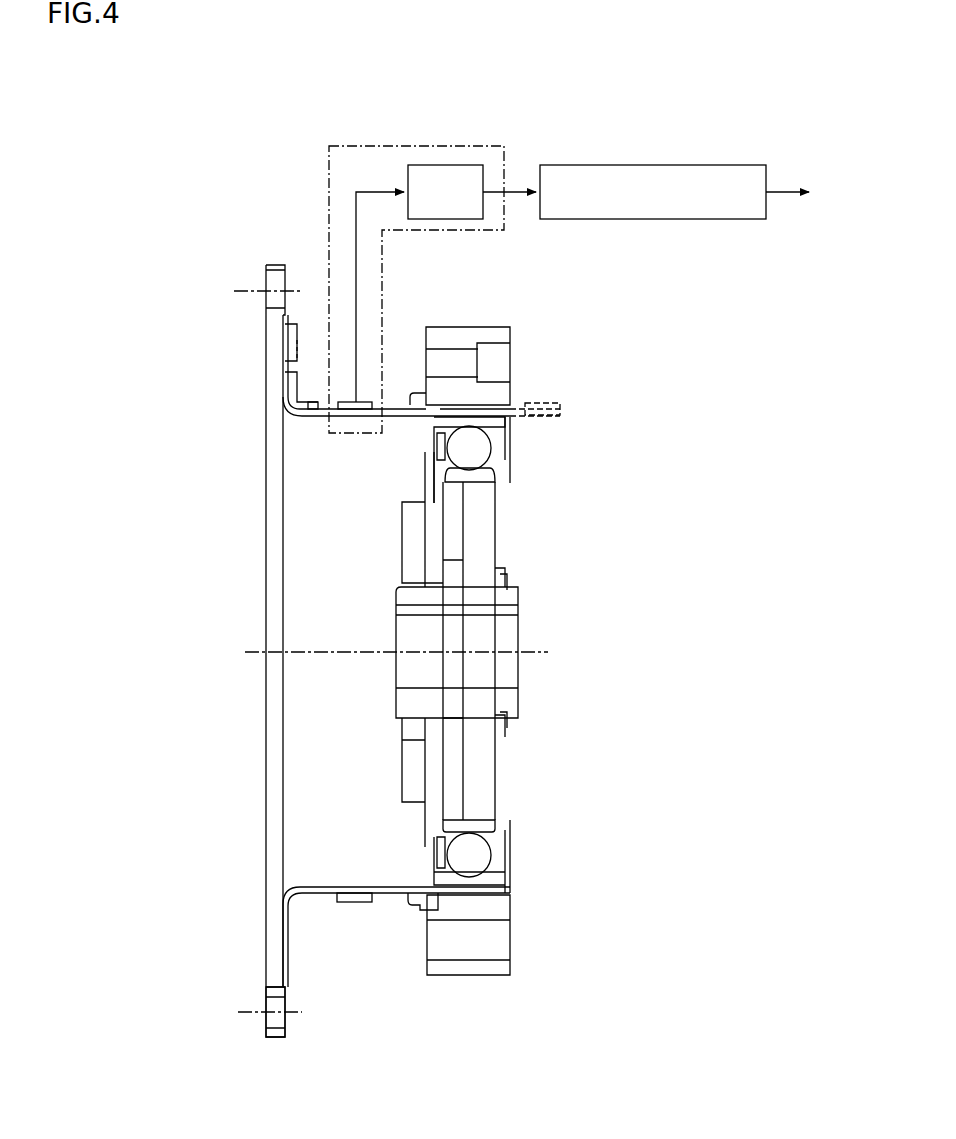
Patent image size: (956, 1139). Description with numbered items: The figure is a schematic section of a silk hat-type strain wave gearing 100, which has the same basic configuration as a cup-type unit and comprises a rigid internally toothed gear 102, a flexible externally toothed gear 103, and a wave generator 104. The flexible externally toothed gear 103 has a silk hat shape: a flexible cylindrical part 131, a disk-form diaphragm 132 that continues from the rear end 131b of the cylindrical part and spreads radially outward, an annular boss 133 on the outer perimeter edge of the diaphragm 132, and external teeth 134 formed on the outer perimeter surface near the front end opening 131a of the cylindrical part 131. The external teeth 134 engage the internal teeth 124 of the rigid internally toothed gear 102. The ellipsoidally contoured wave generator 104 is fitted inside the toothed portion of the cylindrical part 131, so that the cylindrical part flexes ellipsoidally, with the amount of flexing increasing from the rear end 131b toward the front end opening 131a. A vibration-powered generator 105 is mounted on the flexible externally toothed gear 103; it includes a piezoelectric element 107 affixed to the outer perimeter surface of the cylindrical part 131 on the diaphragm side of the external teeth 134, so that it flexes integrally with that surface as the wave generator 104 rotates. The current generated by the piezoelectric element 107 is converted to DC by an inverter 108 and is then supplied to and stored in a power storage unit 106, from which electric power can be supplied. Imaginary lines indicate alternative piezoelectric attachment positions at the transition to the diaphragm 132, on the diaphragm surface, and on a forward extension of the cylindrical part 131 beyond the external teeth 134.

The silk hat-type strain wave gearing 100 is at (679, 401).
The rigid internally toothed gear 102 is at (525, 932).
The flexible externally toothed gear 103 is at (256, 885).
The wave generator 104 is at (507, 752).
The vibration-powered generator 105 is at (381, 141).
The power storage unit 106 is at (641, 162).
The piezoelectric element 107 is at (362, 402).
The inverter 108 is at (466, 165).
The internal teeth 124 is at (483, 883).
The flexible cylindrical part 131 is at (330, 887).
The front end opening 131a is at (506, 888).
The rear end 131b is at (298, 887).
The diaphragm 132 is at (280, 940).
The annular boss 133 is at (265, 1030).
The external teeth 134 is at (427, 915).